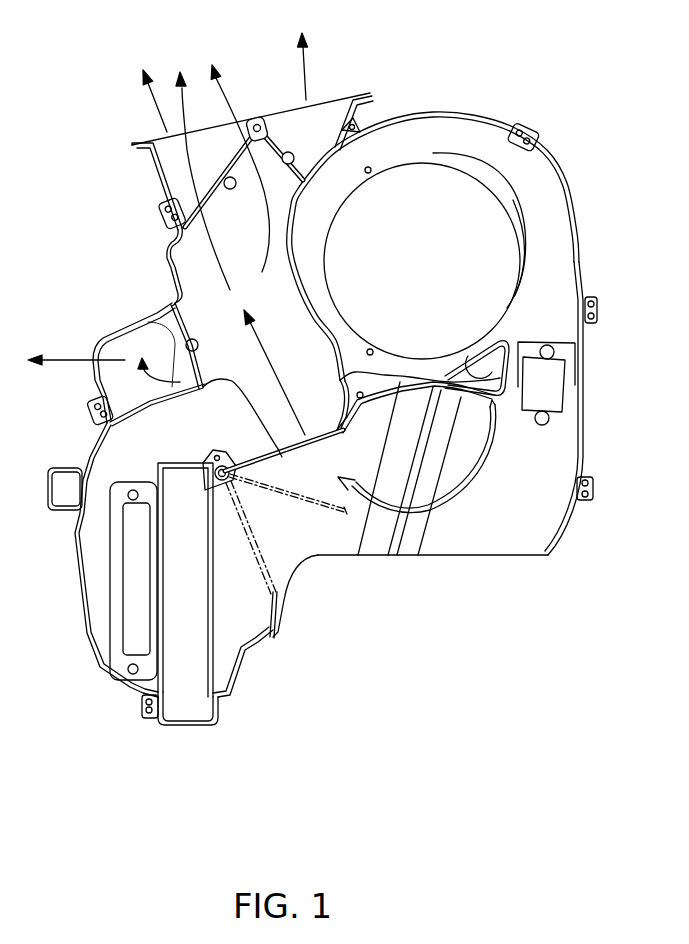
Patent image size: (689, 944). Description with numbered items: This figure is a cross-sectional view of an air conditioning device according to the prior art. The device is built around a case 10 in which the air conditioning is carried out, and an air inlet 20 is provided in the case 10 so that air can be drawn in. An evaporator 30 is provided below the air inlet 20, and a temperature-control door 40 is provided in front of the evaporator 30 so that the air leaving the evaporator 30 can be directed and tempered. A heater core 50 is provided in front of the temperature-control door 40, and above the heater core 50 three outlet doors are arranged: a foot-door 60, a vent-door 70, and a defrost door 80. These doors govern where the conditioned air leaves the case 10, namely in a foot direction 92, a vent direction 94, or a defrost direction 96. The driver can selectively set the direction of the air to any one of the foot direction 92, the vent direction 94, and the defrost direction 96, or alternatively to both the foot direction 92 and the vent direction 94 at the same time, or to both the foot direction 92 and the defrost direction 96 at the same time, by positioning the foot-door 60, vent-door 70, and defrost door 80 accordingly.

The case 10 is at (502, 557).
The air inlet 20 is at (487, 230).
The evaporator 30 is at (405, 550).
The temperature-control door 40 is at (305, 498).
The heater core 50 is at (182, 678).
The foot-door 60 is at (178, 330).
The vent-door 70 is at (193, 215).
The defrost door 80 is at (283, 137).
The foot direction 92 is at (67, 358).
The vent direction 94 is at (158, 108).
The defrost direction 96 is at (302, 63).